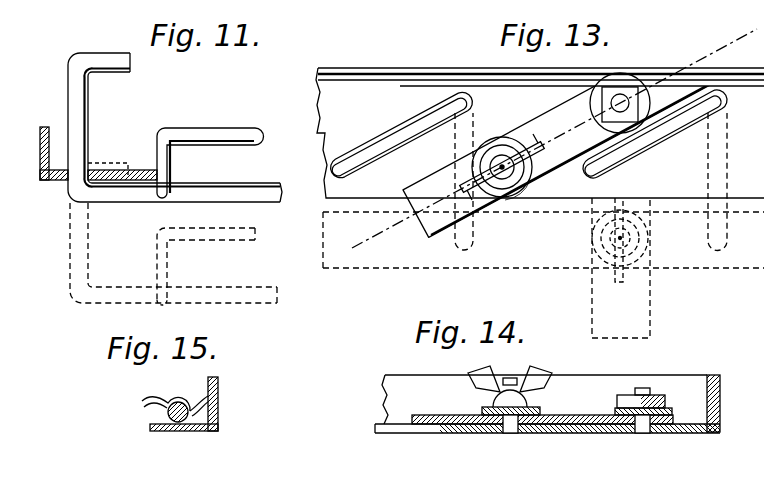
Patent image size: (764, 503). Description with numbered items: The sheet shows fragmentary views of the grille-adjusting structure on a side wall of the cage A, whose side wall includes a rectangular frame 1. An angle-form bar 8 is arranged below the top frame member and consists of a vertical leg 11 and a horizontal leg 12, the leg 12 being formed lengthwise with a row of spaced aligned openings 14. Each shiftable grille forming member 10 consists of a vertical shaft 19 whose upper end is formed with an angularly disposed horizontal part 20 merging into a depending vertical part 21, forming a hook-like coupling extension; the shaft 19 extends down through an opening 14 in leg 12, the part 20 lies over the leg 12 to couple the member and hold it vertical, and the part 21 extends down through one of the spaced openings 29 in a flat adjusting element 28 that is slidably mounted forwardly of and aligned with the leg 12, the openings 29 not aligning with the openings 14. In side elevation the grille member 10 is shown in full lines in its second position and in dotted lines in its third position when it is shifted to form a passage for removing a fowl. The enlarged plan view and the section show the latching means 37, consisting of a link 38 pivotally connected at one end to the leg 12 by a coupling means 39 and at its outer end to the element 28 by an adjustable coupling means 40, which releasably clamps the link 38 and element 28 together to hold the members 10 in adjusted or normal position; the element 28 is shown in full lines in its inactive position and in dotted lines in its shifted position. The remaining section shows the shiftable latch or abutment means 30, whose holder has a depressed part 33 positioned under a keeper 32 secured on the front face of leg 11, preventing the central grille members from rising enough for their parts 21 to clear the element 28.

In FIG. 11, the rectangular frame 1 is at (79, 162).
In FIG. 13, the rectangular frame 1 is at (519, 123).
In FIG. 14, the rectangular frame 1 is at (549, 417).
In FIG. 15, the rectangular frame 1 is at (192, 418).
In FIG. 11, the bar 8 is at (35, 165).
In FIG. 13, the bar 8 is at (519, 123).
In FIG. 14, the bar 8 is at (564, 417).
In FIG. 15, the bar 8 is at (192, 418).
In FIG. 11, the shiftable grille forming member 10 is at (232, 142).
In FIG. 13, the shiftable grille forming member 10 is at (402, 128).
In FIG. 11, the vertical leg 11 is at (40, 164).
In FIG. 13, the vertical leg 11 is at (418, 75).
In FIG. 14, the vertical leg 11 is at (721, 401).
In FIG. 15, the vertical leg 11 is at (220, 413).
In FIG. 11, the horizontal leg 12 is at (65, 181).
In FIG. 13, the horizontal leg 12 is at (318, 120).
In FIG. 14, the horizontal leg 12 is at (683, 433).
In FIG. 15, the horizontal leg 12 is at (163, 432).
In FIG. 11, the openings 14 is at (154, 179).
In FIG. 13, the openings 14 is at (543, 148).
In FIG. 11, the vertical shaft 19 is at (146, 195).
In FIG. 11, the horizontal part 20 is at (175, 127).
In FIG. 13, the horizontal part 20 is at (383, 150).
In FIG. 11, the depending vertical part 21 is at (110, 73).
In FIG. 11, the adjusting element 28 is at (133, 170).
In FIG. 13, the adjusting element 28 is at (325, 152).
In FIG. 14, the adjusting element 28 is at (486, 433).
In FIG. 13, the openings 29 is at (325, 172).
In FIG. 15, the shiftable latch or abutment means 30 is at (165, 414).
In FIG. 15, the keeper 32 is at (202, 401).
In FIG. 15, the depressed part 33 is at (164, 394).
In FIG. 13, the latching means 37 is at (573, 129).
In FIG. 14, the latching means 37 is at (542, 408).
In FIG. 13, the link 38 is at (560, 157).
In FIG. 14, the link 38 is at (560, 421).
In FIG. 13, the coupling means 39 is at (625, 92).
In FIG. 14, the coupling means 39 is at (657, 396).
In FIG. 13, the adjustable coupling means 40 is at (504, 204).
In FIG. 14, the adjustable coupling means 40 is at (490, 400).
In FIG. 11, the cage A is at (248, 170).